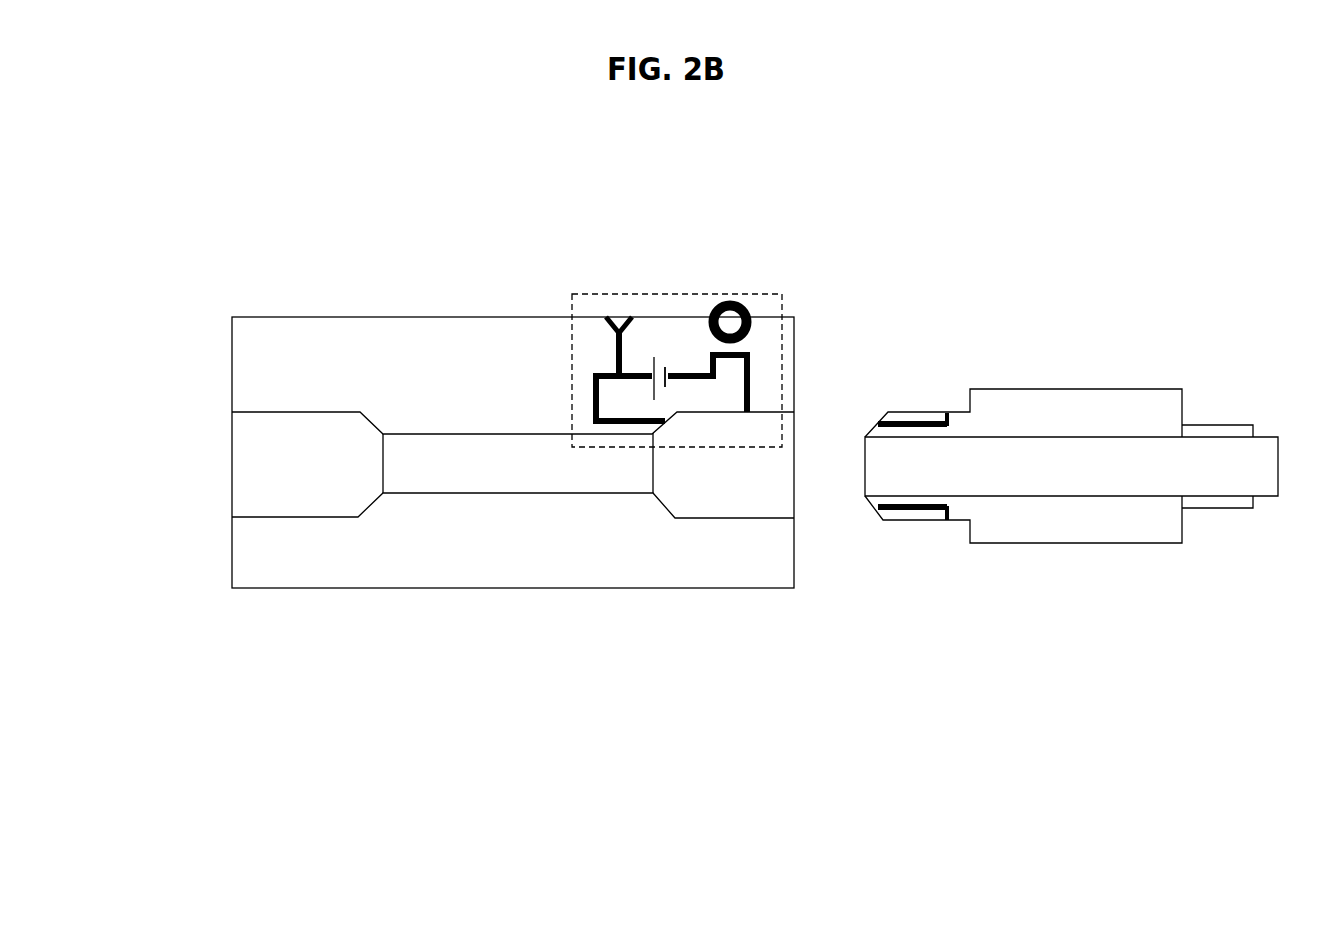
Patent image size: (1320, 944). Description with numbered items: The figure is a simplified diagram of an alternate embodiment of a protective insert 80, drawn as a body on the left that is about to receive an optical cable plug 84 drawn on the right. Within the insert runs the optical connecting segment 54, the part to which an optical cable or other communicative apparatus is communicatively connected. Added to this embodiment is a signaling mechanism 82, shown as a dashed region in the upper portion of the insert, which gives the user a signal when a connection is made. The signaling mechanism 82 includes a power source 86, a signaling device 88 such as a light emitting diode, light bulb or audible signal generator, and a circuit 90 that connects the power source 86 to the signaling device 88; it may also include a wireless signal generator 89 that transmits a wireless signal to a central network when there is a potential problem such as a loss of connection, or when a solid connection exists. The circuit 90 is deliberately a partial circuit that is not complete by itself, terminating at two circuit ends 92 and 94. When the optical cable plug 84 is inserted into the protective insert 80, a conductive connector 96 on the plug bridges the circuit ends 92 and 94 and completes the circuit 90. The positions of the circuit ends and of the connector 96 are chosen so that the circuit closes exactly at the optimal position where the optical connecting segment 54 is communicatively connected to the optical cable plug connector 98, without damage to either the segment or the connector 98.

The optical connecting segment 54 is at (490, 473).
The protective insert 80 is at (558, 640).
The signaling mechanism 82 is at (762, 292).
The optical cable plug 84 is at (1074, 407).
The power source 86 is at (654, 357).
The signaling device 88 is at (717, 302).
The wireless signal generator 89 is at (617, 313).
The circuit 90 is at (590, 400).
The circuit end 92 is at (668, 430).
The circuit end 94 is at (747, 424).
The conductive connector 96 is at (946, 408).
The optical cable plug connector 98 is at (1230, 476).